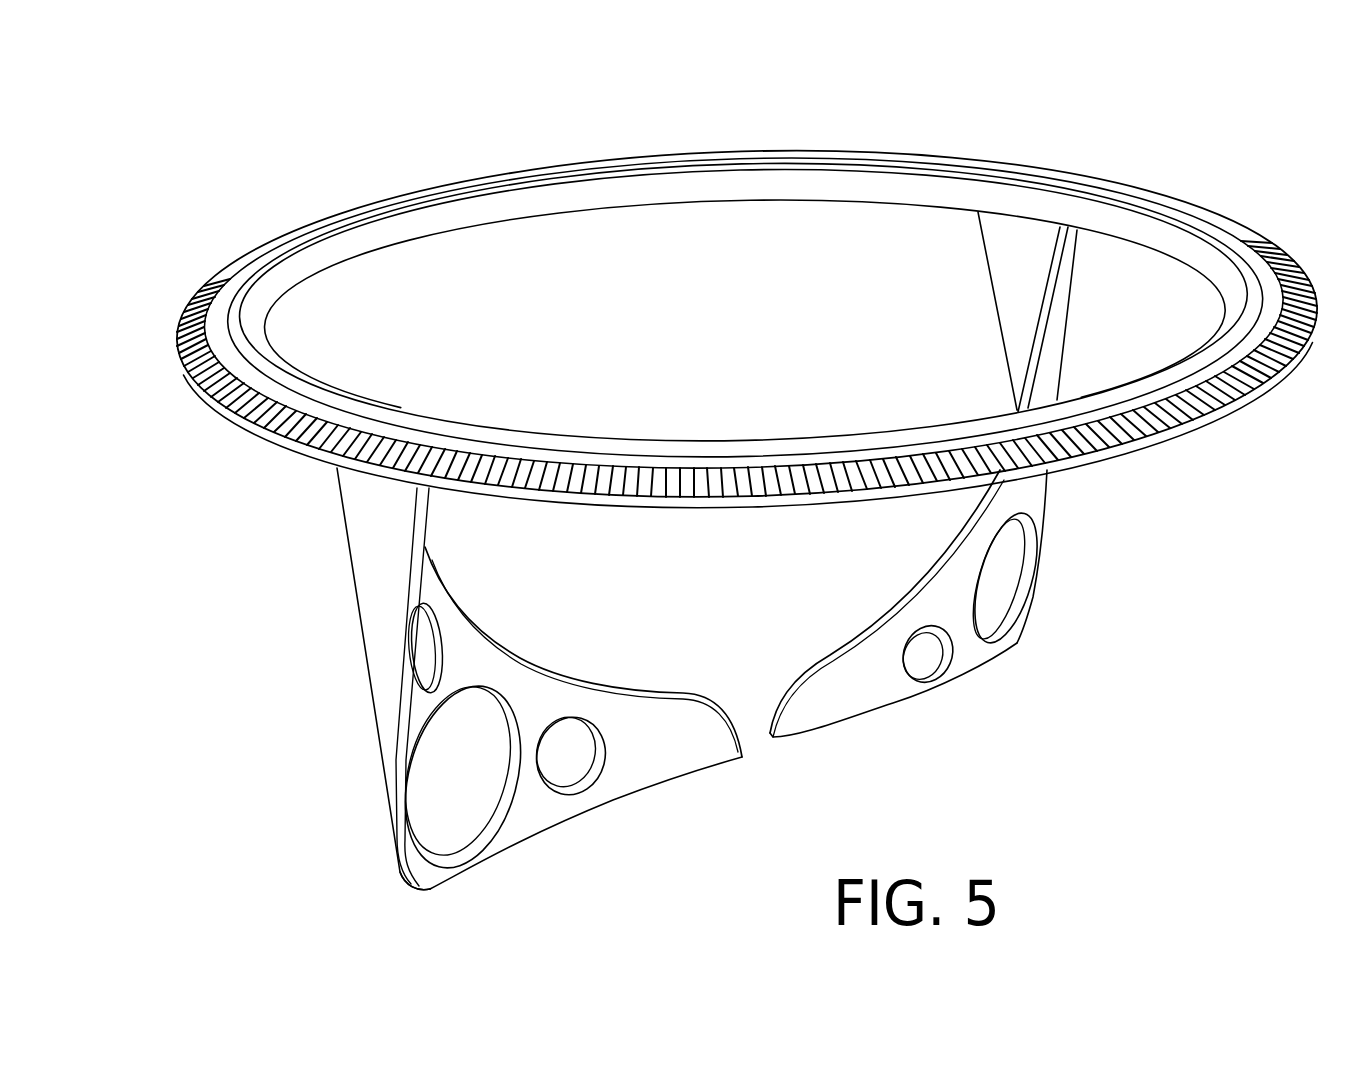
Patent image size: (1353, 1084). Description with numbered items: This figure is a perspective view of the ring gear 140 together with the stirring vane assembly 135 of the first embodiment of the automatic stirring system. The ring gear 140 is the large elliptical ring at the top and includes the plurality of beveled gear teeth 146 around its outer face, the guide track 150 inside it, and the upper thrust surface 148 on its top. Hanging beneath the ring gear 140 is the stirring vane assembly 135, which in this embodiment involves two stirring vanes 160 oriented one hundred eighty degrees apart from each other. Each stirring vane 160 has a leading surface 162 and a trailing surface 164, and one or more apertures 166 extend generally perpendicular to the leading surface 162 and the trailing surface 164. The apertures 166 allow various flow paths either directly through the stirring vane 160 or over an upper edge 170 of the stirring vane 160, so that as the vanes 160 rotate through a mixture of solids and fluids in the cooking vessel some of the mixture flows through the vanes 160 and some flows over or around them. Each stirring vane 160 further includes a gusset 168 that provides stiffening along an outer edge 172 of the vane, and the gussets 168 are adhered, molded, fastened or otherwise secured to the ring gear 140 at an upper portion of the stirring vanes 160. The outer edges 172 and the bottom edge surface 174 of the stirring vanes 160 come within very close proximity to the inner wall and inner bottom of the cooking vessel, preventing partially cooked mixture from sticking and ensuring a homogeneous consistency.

The stirring vane assembly 135 is at (695, 294).
The ring gear 140 is at (227, 297).
The beveled gear teeth 146 is at (187, 313).
The upper thrust surface 148 is at (323, 247).
The guide track 150 is at (262, 270).
The stirring vane 160 is at (715, 702).
The leading surface 162 is at (641, 718).
The trailing surface 164 is at (885, 698).
The apertures 166 is at (440, 625).
The gusset 168 is at (357, 537).
The upper edge 170 is at (857, 640).
The outer edge 172 is at (400, 832).
The bottom edge surface 174 is at (846, 745).